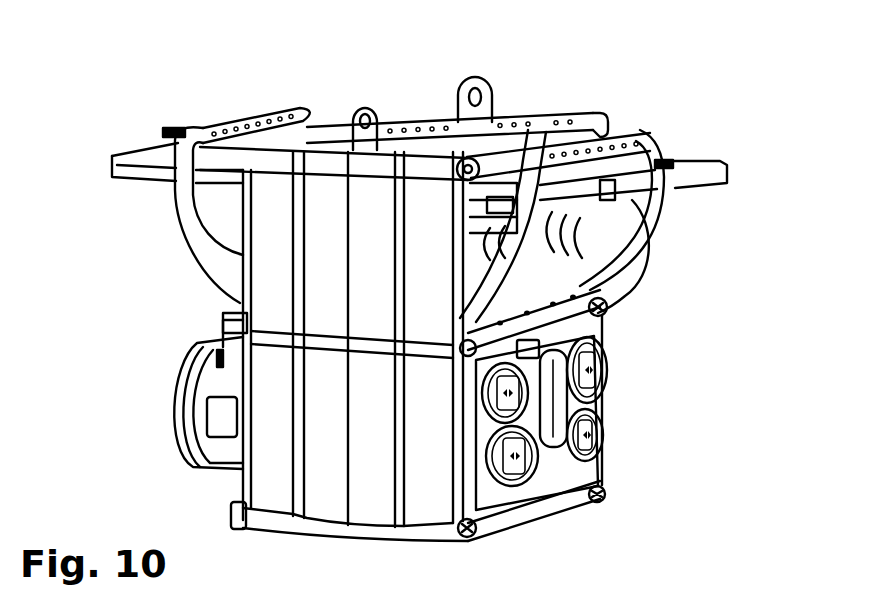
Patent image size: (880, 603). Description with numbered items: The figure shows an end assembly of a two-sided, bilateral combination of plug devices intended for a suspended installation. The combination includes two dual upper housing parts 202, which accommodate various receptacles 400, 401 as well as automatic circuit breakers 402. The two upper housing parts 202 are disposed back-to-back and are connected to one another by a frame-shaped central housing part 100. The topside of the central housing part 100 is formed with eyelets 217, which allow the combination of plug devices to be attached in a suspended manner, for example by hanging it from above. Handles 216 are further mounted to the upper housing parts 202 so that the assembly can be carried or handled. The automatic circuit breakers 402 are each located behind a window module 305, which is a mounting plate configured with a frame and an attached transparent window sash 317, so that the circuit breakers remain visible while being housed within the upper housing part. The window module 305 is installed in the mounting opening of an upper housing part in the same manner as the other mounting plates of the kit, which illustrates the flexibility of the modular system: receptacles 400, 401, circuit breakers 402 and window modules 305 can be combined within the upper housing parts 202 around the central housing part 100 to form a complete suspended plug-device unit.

The central housing part 100 is at (425, 123).
The upper housing part 202 is at (423, 207).
The eyelet 217 is at (490, 103).
The handle 216 is at (638, 128).
The transparent window sash 317 is at (727, 180).
The automatic circuit breaker 402 is at (583, 263).
The window module 305 is at (583, 297).
The receptacle 401 is at (600, 362).
The receptacle 400 is at (172, 390).